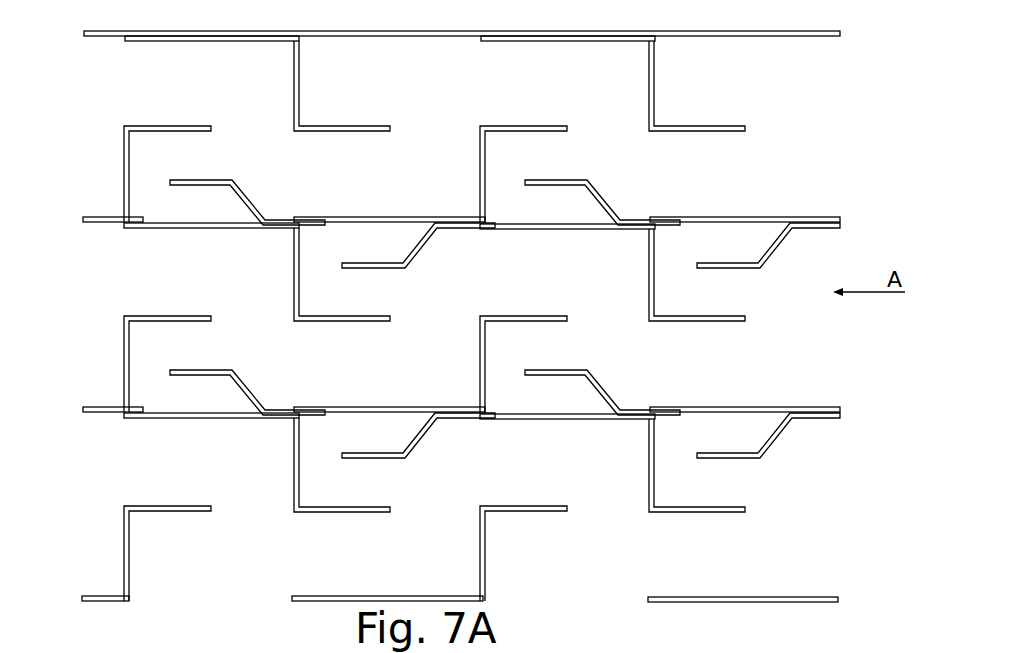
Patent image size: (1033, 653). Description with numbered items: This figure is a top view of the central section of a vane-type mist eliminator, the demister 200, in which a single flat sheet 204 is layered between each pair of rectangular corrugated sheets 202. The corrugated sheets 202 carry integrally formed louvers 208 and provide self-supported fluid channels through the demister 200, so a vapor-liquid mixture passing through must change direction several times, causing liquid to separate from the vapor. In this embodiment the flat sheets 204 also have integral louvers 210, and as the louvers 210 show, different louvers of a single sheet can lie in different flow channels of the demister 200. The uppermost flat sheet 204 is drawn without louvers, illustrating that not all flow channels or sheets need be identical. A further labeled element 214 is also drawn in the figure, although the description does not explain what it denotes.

The demister 200 is at (815, 21).
The flat sheet 204 is at (808, 38).
The corrugated sheet 202 is at (116, 153).
The louver 208 is at (305, 512).
The louver 210 is at (600, 387).
The inverted-L tab 214 is at (218, 420).